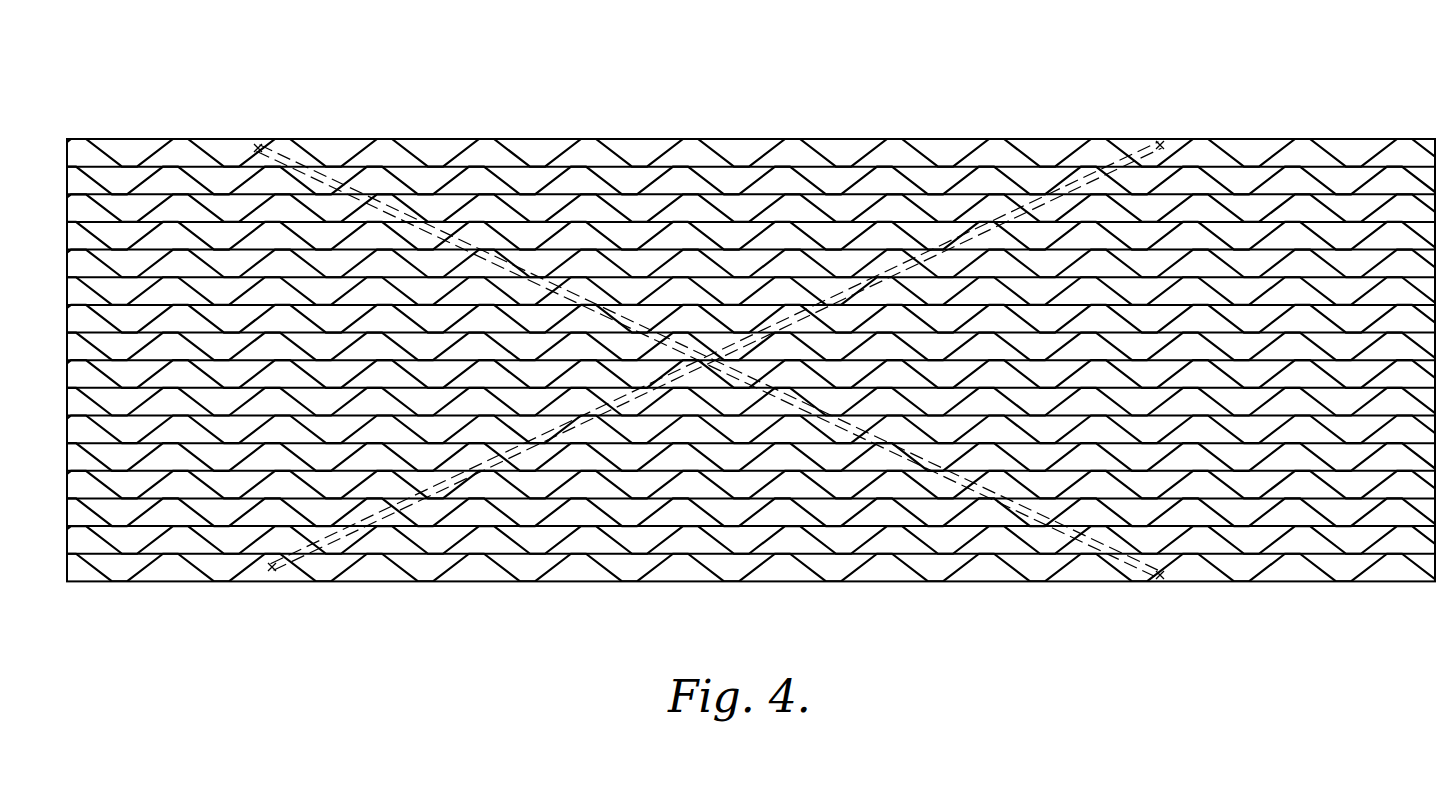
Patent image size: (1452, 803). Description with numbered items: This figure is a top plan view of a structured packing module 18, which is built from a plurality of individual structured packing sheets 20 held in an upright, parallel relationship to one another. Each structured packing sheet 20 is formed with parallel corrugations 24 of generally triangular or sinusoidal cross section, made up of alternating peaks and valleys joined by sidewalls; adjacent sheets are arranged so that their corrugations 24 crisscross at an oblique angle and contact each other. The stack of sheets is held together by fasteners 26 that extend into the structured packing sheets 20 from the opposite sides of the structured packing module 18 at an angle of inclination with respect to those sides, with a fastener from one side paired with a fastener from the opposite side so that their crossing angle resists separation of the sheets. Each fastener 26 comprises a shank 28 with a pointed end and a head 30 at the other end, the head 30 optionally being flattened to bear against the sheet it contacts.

The structured packing module 18 is at (697, 134).
The structured packing sheet 20 is at (1347, 160).
The corrugations 24 is at (1315, 573).
The fasteners 26 is at (334, 176).
The shank 28 is at (289, 165).
The head 30 is at (257, 146).